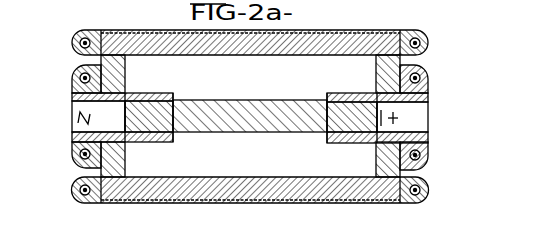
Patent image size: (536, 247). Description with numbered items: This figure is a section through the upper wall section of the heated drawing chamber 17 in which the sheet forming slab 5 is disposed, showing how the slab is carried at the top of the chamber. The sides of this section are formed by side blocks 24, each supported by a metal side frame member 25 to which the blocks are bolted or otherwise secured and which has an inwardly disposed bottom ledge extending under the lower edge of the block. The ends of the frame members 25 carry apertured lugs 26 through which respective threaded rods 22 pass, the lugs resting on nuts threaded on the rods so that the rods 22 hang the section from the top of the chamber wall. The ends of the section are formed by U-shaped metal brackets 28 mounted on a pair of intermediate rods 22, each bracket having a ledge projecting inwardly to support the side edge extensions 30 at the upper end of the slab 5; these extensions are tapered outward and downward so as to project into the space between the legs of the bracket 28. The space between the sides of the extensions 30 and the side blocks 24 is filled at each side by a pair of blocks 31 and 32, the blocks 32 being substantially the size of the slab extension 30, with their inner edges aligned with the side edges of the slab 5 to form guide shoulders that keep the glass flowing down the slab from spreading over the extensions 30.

The slab 5 is at (250, 110).
The heated chamber 17 is at (250, 174).
The threaded rods 22 is at (417, 39).
The side blocks 24 is at (341, 50).
The metal side frame member 25 is at (357, 34).
The apertured lugs 26 is at (427, 44).
The U-shaped metal brackets 28 is at (80, 153).
The side edge extensions 30 is at (153, 128).
The blocks 31 is at (123, 75).
The blocks 32 is at (165, 94).